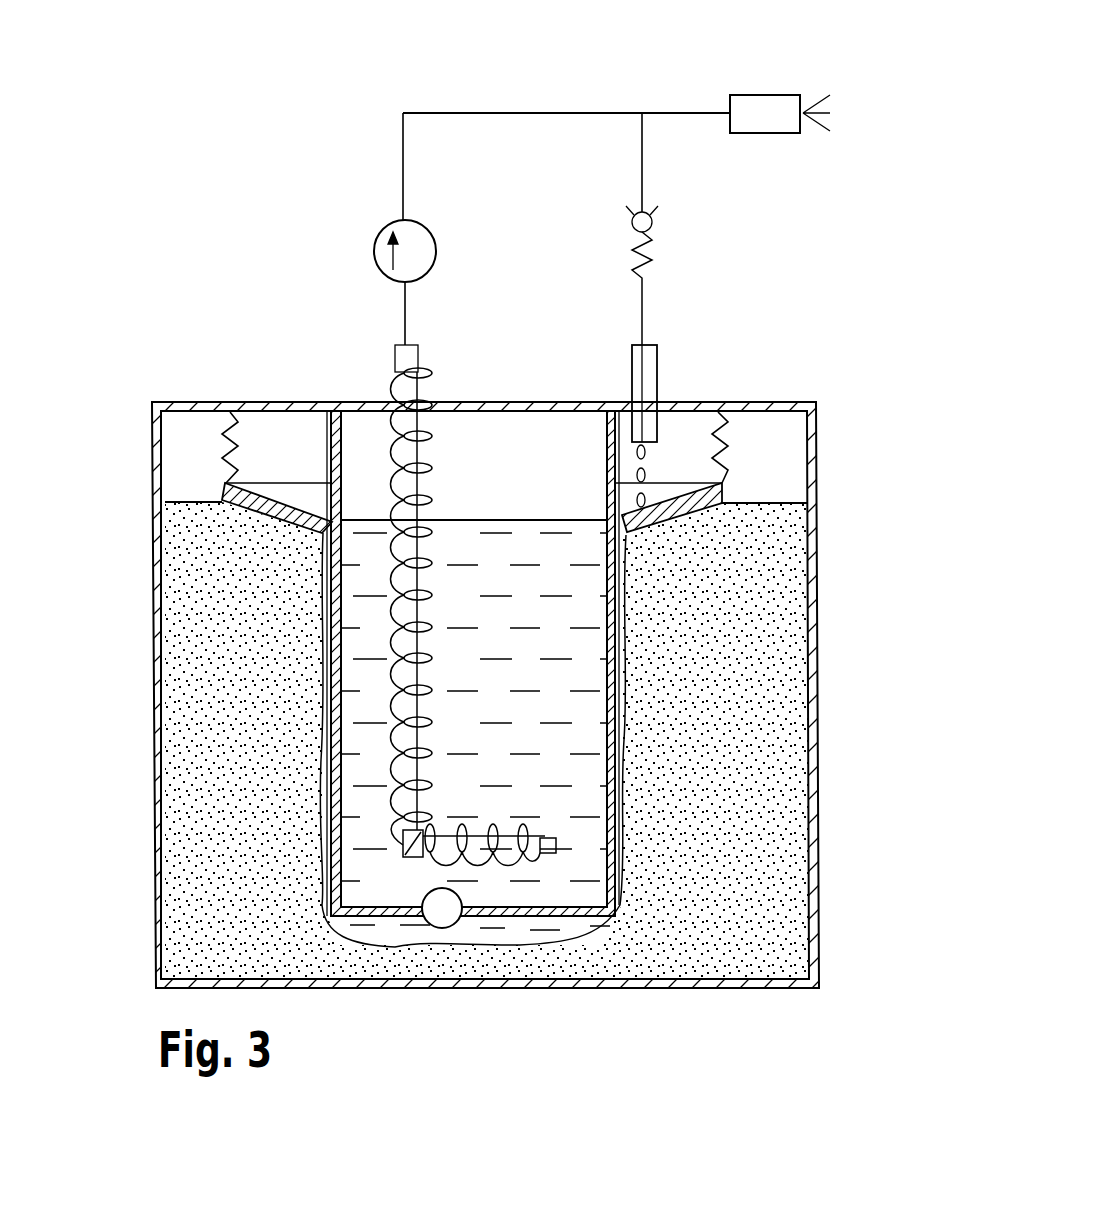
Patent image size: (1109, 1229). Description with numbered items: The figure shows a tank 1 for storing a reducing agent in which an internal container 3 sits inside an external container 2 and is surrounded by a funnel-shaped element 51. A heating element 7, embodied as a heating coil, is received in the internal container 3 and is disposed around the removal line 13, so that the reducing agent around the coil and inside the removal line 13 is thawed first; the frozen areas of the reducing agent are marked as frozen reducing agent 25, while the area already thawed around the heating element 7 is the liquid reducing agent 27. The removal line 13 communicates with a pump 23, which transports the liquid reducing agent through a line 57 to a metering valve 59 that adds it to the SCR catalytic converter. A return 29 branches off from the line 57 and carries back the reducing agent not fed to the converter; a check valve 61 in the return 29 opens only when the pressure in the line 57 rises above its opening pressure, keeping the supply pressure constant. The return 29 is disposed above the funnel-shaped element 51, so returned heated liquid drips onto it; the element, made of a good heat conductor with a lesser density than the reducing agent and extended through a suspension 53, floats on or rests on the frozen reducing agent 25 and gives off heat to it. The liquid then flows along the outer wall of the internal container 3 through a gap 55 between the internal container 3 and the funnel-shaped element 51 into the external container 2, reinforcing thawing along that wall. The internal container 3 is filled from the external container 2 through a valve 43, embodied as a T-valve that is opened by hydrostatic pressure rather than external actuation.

The tank 1 is at (140, 380).
The external container 2 is at (153, 470).
The internal container 3 is at (331, 445).
The heating element 7 is at (432, 550).
The removal line 13 is at (407, 743).
The pump 23 is at (384, 229).
The frozen reducing agent 25 is at (777, 665).
The liquid reducing agent 27 is at (570, 745).
The return 29 is at (650, 330).
The valve 43 is at (447, 929).
The funnel-shaped element 51 is at (254, 483).
The suspension 53 is at (722, 428).
The gap 55 is at (322, 533).
The line 57 is at (668, 113).
The metering valve 59 is at (762, 100).
The check valve 61 is at (654, 224).